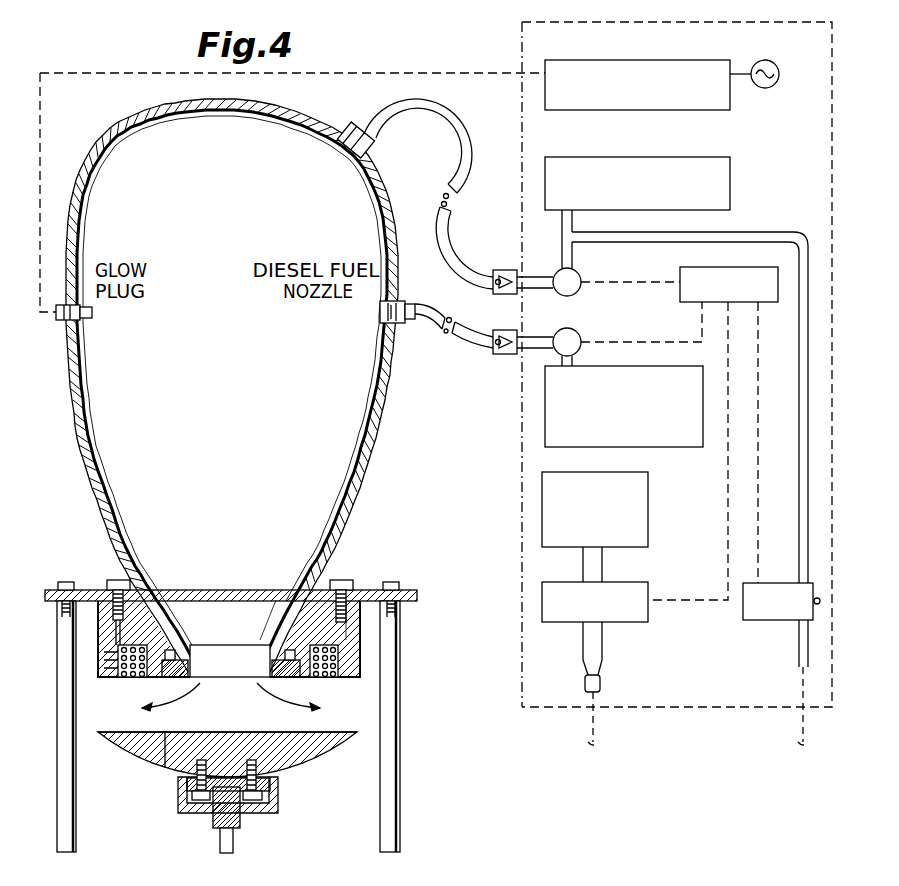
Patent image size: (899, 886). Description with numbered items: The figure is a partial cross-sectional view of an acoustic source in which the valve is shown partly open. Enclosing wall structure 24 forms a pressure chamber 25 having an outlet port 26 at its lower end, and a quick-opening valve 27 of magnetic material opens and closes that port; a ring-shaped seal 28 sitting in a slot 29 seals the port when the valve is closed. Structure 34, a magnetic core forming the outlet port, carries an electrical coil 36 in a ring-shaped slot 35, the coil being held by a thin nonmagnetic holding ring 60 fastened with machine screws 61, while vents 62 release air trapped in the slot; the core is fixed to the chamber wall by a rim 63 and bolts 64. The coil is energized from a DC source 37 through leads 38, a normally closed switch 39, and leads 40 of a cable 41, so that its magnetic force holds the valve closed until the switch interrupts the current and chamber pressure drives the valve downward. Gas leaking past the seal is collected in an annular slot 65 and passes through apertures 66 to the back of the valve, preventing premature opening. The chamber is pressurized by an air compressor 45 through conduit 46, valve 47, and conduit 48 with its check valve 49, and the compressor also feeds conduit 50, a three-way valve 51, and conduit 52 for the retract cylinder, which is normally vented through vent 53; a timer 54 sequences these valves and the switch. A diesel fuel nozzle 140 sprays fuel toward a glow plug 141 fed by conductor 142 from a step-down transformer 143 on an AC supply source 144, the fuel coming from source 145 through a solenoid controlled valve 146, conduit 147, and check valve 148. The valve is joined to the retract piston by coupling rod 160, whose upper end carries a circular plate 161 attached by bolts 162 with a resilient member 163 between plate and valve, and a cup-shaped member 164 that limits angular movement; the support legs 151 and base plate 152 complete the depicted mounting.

The enclosing wall structure 24 is at (70, 395).
The pressure chamber 25 is at (221, 220).
The outlet port 26 is at (231, 648).
The quick-opening valve 27 is at (124, 758).
The ring-shaped seal 28 is at (186, 648).
The slot 29 is at (192, 665).
The structure 34 is at (277, 624).
The ring-shaped slot 35 is at (122, 647).
The electrical coil 36 is at (118, 650).
The DC source 37 is at (603, 472).
The leads 38 is at (590, 577).
The normally closed switch 39 is at (622, 622).
The leads 40 is at (584, 648).
The cable 41 is at (598, 725).
The air compressor 45 is at (730, 186).
The conduit 46 is at (561, 233).
The valve 47 is at (581, 279).
The conduit 48 is at (405, 115).
The check valve 49 is at (514, 269).
The conduit 50 is at (790, 236).
The three-way valve 51 is at (785, 621).
The conduit 52 is at (798, 722).
The vent 53 is at (816, 597).
The timer 54 is at (715, 268).
The nonmagnetic holding ring 60 is at (335, 677).
The machine screws 61 is at (305, 677).
The vents 62 is at (133, 583).
The rim 63 is at (365, 594).
The bolts 64 is at (341, 583).
The annular slot 65 is at (290, 736).
The apertures 66 is at (185, 776).
The diesel fuel nozzle 140 is at (380, 320).
The glow plug 141 is at (90, 322).
The conductor 142 is at (42, 140).
The step-down transformer 143 is at (612, 60).
The AC supply source 144 is at (760, 60).
The source 145 is at (670, 447).
The solenoid controlled valve 146 is at (581, 336).
The conduit 147 is at (528, 338).
The check valve 148 is at (506, 330).
The support legs 151 is at (57, 743).
The base plate 152 is at (400, 590).
The coupling rod 160 is at (234, 845).
The circular plate 161 is at (212, 812).
The bolts 162 is at (184, 800).
The resilient member 163 is at (268, 773).
The cup-shaped member 164 is at (279, 806).